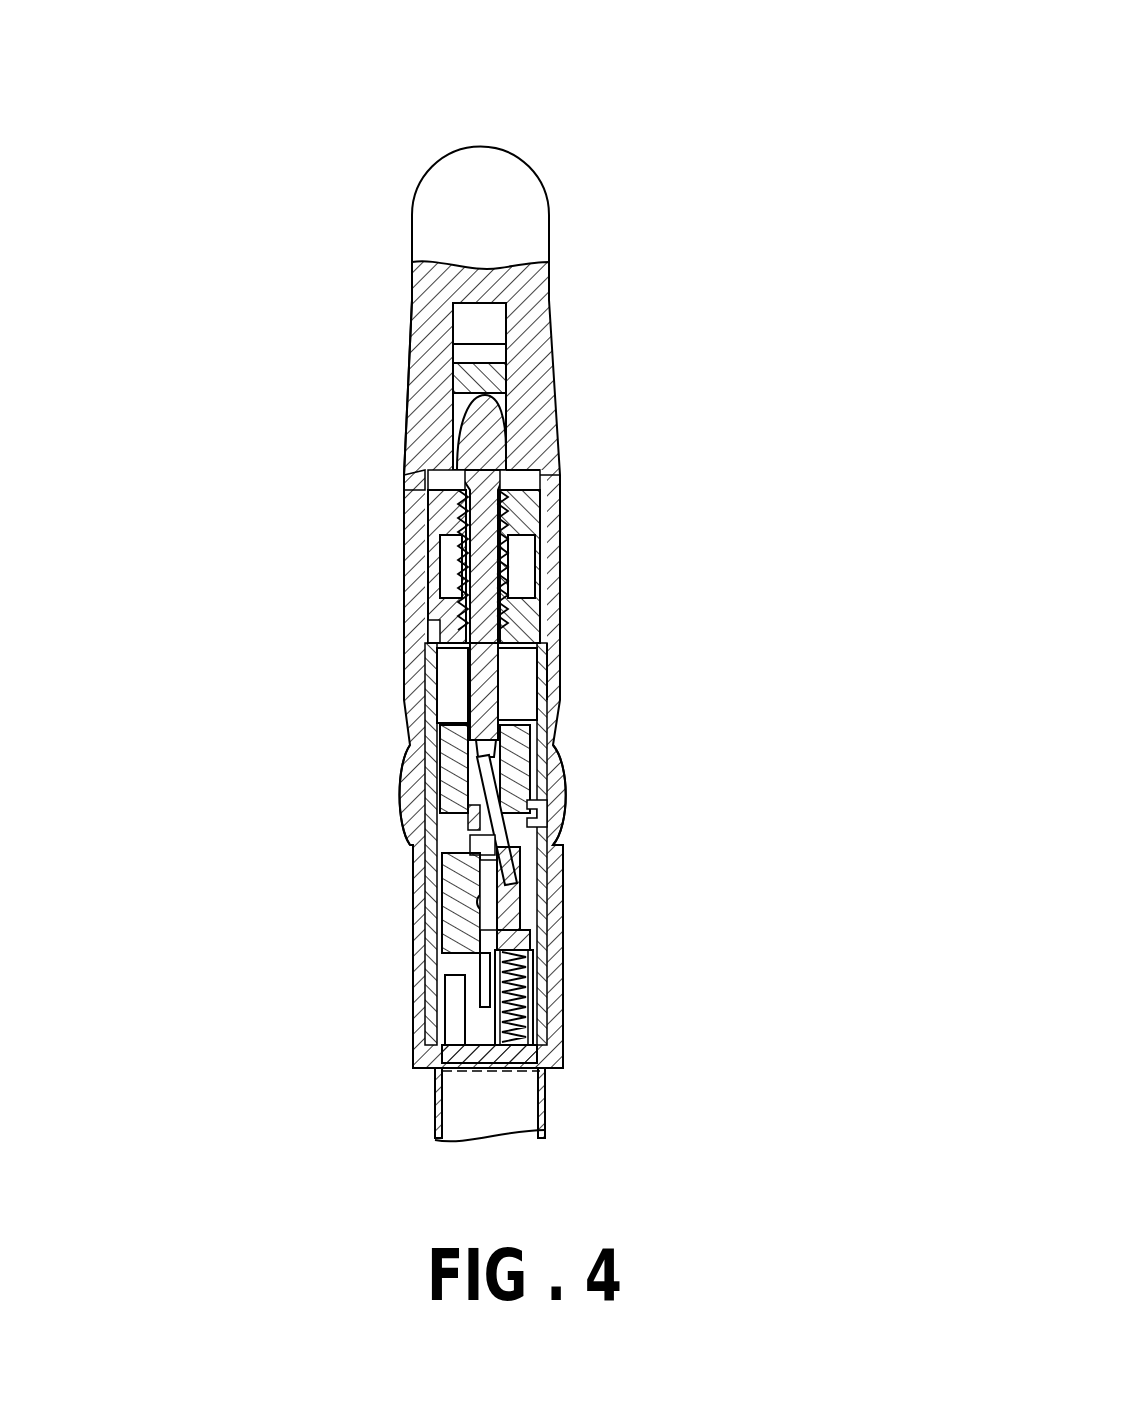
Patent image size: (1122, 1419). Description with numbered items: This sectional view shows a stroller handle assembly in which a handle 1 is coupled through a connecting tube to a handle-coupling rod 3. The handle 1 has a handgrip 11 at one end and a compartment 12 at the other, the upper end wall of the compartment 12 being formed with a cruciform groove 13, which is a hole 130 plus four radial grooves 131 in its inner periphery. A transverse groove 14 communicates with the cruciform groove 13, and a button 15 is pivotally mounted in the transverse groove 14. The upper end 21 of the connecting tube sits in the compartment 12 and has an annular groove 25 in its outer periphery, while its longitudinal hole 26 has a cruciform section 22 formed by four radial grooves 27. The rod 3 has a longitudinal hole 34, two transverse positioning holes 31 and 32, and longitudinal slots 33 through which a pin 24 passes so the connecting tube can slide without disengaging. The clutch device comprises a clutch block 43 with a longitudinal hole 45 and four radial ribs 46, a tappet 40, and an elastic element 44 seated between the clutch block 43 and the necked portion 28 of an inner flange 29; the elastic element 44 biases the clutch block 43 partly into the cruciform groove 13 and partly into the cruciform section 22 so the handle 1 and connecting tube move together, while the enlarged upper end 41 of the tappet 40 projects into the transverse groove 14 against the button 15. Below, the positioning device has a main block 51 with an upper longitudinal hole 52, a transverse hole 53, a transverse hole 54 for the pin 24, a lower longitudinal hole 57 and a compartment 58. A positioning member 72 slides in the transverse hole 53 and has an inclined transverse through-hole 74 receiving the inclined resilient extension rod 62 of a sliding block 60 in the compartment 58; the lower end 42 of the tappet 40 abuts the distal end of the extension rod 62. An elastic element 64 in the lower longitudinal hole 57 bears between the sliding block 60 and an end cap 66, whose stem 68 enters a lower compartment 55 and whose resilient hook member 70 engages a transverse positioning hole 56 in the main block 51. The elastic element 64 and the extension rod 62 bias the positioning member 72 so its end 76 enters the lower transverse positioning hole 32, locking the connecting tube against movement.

The handle 1 is at (588, 190).
The handgrip 11 is at (475, 147).
The compartment 12 is at (552, 512).
The cruciform groove 13 is at (412, 505).
The transverse groove 14 is at (468, 327).
The button 15 is at (468, 373).
The upper end 21 is at (520, 575).
The cruciform section 22 is at (442, 550).
The pin 24 is at (478, 905).
The annular groove 25 is at (445, 615).
The longitudinal hole 26 is at (440, 597).
The radial grooves 27 is at (432, 568).
The necked portion 28 is at (460, 645).
The inner flange 29 is at (508, 620).
The handle-coupling rod 3 is at (430, 662).
The transverse positioning hole 31 is at (540, 670).
The transverse positioning hole 32 is at (548, 810).
The longitudinal slot 33 is at (465, 775).
The longitudinal hole 34 is at (440, 700).
The tappet 40 is at (465, 550).
The enlarged upper end 41 is at (478, 428).
The lower end 42 is at (492, 720).
The clutch block 43 is at (503, 540).
The elastic element 44 is at (520, 600).
The longitudinal hole 45 is at (535, 470).
The radial ribs 46 is at (455, 490).
The main block 51 is at (520, 745).
The upper longitudinal hole 52 is at (455, 758).
The transverse hole 53 is at (455, 880).
The transverse hole 54 is at (500, 880).
The lower compartment 55 is at (460, 1035).
The transverse positioning hole 56 is at (480, 960).
The lower longitudinal hole 57 is at (520, 990).
The compartment 58 is at (512, 935).
The sliding block 60 is at (518, 905).
The inclined resilient extension rod 62 is at (500, 775).
The elastic element 64 is at (530, 950).
The end cap 66 is at (540, 1062).
The stem 68 is at (532, 1020).
The resilient hook member 70 is at (455, 990).
The positioning member 72 is at (468, 815).
The inclined transverse through-hole 74 is at (470, 850).
The end 76 is at (540, 825).
The hole 130 is at (450, 462).
The radial grooves 131 is at (548, 480).